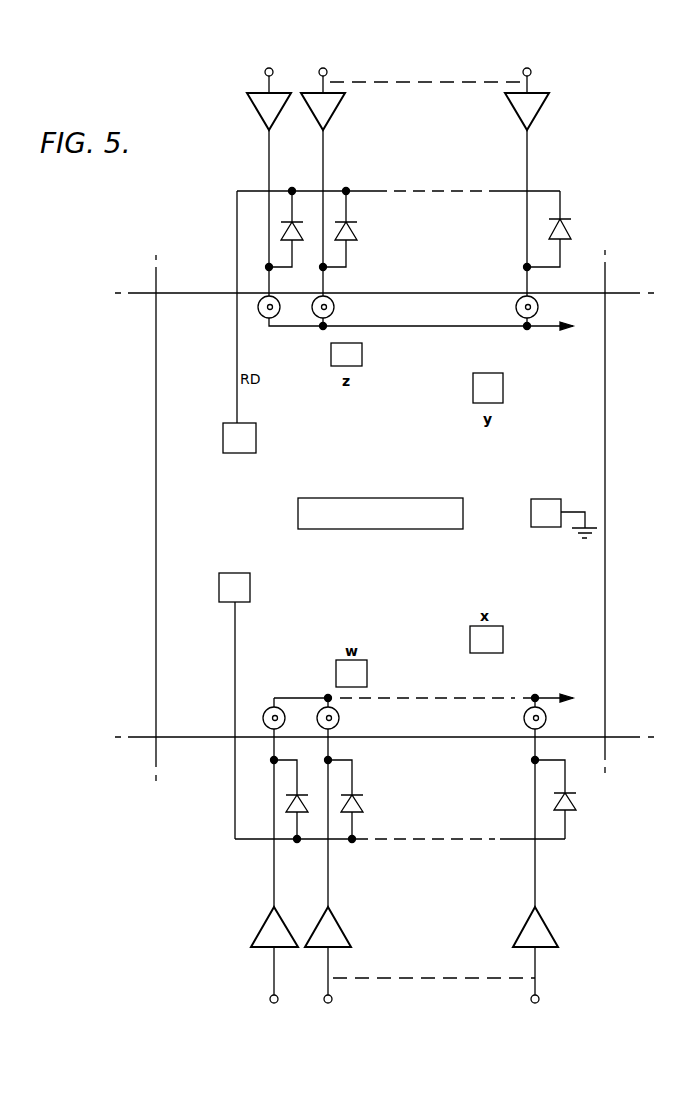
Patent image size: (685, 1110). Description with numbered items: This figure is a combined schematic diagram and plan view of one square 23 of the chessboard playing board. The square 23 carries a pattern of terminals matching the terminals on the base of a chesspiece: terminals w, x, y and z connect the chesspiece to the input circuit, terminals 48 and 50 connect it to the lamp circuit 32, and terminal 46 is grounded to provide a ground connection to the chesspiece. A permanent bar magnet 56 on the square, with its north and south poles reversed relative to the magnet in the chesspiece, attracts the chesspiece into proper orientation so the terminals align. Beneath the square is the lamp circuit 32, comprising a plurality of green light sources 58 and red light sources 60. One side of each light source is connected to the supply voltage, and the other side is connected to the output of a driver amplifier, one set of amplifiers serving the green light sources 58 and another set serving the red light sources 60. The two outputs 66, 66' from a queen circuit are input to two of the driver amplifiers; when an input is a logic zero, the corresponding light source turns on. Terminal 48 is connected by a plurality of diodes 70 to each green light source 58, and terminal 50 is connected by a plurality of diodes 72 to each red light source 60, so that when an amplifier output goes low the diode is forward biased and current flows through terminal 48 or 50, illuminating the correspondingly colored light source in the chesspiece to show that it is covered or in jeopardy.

The square 23 is at (606, 400).
The lamp circuit 32 is at (593, 148).
The diodes 72 is at (283, 232).
The red light sources 60 is at (315, 316).
The terminal 50 is at (258, 441).
The permanent magnet 56 is at (408, 498).
The terminal 46 is at (551, 500).
The terminal 48 is at (252, 594).
The green light sources 58 is at (319, 708).
The diodes 70 is at (290, 800).
The output 66 is at (243, 1001).
The output 66' is at (357, 1001).